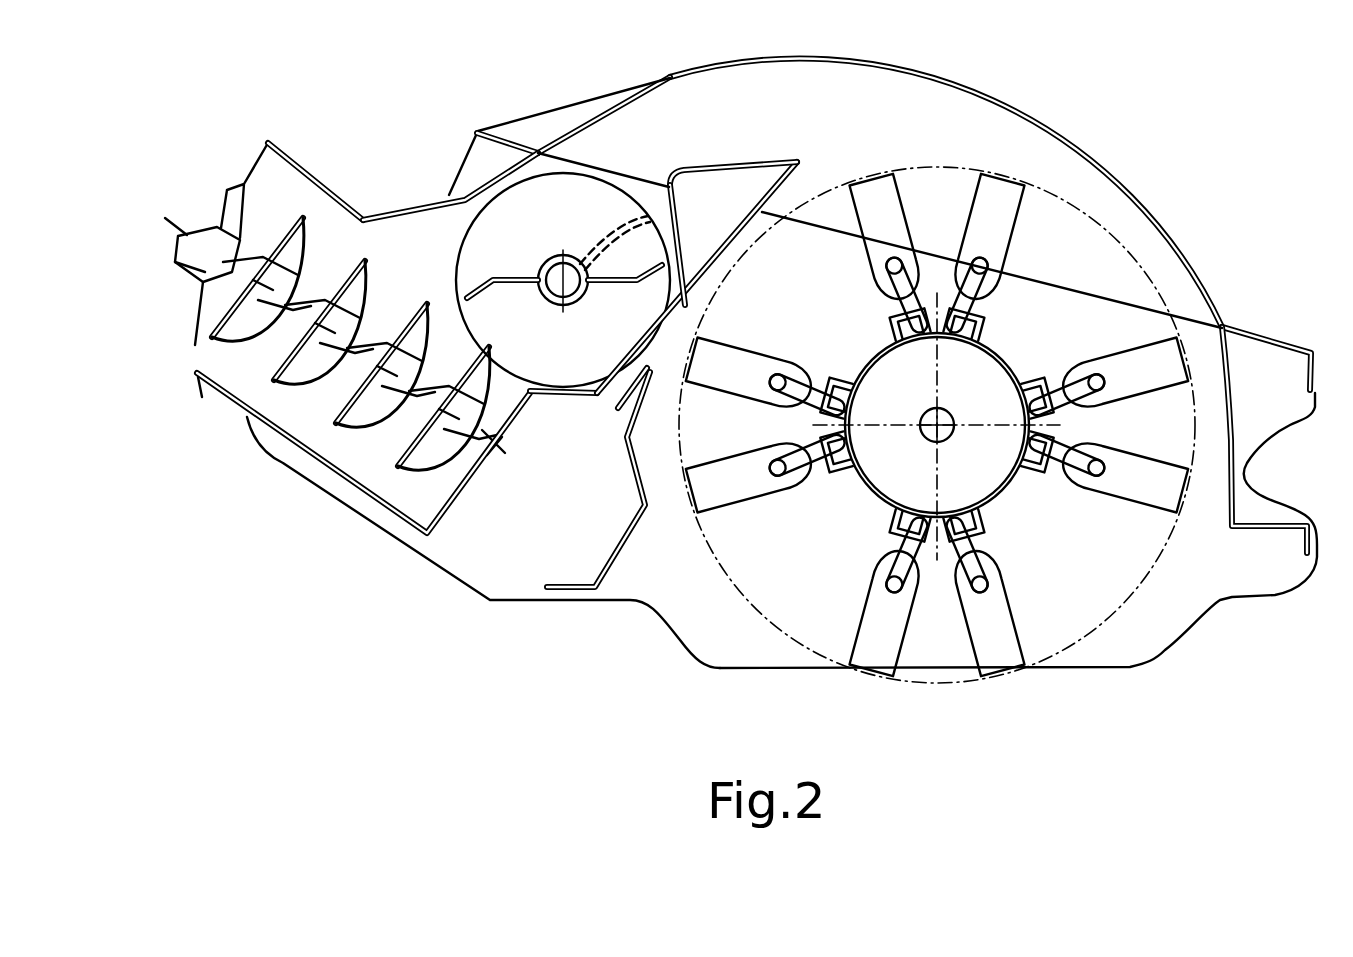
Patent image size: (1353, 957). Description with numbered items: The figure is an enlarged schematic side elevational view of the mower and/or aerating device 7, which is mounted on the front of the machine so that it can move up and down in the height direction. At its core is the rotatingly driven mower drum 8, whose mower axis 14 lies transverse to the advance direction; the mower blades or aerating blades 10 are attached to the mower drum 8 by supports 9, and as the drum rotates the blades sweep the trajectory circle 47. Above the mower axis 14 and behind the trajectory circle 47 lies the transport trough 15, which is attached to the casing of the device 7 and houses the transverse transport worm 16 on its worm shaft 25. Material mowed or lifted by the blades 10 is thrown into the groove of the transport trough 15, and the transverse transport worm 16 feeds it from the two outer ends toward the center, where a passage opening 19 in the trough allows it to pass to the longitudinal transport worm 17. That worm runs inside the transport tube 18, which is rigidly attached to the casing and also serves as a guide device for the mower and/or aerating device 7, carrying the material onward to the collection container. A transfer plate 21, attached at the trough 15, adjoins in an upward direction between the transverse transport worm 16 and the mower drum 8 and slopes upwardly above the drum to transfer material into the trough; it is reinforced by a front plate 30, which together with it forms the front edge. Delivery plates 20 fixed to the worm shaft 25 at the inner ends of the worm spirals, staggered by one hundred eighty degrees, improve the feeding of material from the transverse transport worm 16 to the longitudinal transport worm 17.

The mower and/or aerating device 7 is at (1190, 187).
The mower drum 8 is at (867, 487).
The supports 9 is at (950, 570).
The mower blades or aerating blades 10 is at (1133, 480).
The mower axis 14 is at (957, 417).
The transport trough 15 is at (573, 383).
The transverse transport worm 16 is at (585, 262).
The longitudinal transport worm 17 is at (280, 240).
The transport tube 18 is at (357, 243).
The passage opening 19 is at (457, 243).
The delivery plates 20 is at (497, 292).
The transfer plate 21 is at (723, 187).
The worm shaft 25 is at (550, 257).
The front plate 30 is at (718, 279).
The trajectory circle 47 is at (728, 581).